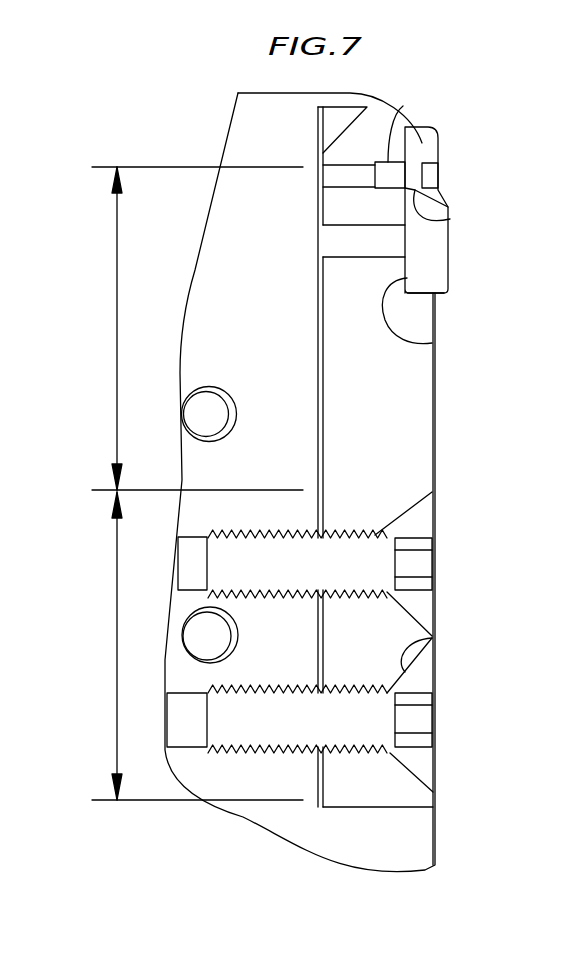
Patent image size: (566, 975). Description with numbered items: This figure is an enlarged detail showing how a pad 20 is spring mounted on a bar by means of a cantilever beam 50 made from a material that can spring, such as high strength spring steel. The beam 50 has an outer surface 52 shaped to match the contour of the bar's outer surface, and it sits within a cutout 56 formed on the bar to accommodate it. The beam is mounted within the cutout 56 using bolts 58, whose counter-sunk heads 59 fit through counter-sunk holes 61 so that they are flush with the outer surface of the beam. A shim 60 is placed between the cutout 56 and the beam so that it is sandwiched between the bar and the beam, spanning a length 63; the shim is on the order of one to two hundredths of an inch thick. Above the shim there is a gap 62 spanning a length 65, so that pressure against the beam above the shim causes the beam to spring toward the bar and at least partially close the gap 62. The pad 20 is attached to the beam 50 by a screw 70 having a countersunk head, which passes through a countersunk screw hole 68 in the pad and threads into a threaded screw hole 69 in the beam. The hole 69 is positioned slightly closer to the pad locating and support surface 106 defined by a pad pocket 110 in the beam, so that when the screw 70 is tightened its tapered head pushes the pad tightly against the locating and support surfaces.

The pad 20 is at (430, 250).
The cantilever beam 50 is at (387, 455).
The outer surface 52 is at (433, 408).
The cutout 56 is at (318, 348).
The bolts 58 is at (355, 557).
The counter-sunk heads 59 is at (432, 640).
The shim 60 is at (320, 645).
The counter-sunk holes 61 is at (413, 613).
The gap 62 is at (318, 462).
The length 63 is at (117, 613).
The length 65 is at (117, 330).
The screw hole 68 is at (450, 219).
The threaded screw hole 69 is at (403, 106).
The screw 70 is at (403, 177).
The horizontal locating and support surface 106 is at (420, 300).
The pad pocket 110 is at (432, 343).